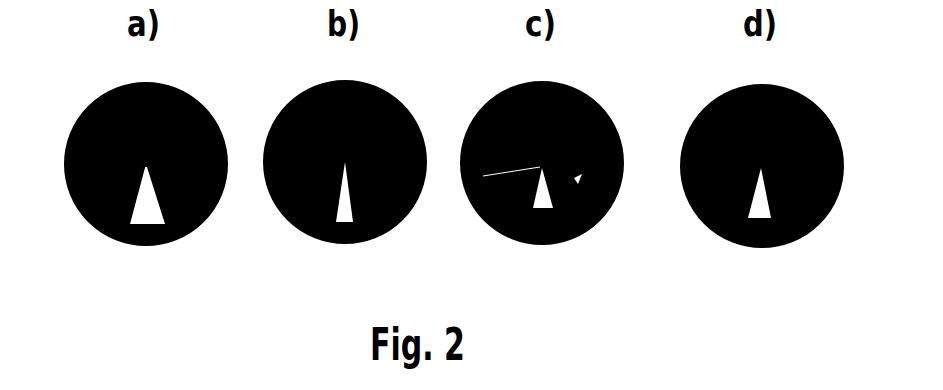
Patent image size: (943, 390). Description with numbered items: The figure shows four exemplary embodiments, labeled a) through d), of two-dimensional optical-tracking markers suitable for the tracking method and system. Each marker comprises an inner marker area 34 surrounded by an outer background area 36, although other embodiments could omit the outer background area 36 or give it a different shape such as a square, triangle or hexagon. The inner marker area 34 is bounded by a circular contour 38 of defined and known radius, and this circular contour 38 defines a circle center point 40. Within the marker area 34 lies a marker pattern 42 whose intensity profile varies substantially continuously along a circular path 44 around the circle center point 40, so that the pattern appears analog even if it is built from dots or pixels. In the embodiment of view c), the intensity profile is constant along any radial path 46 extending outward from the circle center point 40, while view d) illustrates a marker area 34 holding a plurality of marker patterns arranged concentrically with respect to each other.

The inner marker area 34 is at (136, 198).
The outer background area 36 is at (102, 107).
The circular contour 38 is at (178, 207).
The circle center point 40 is at (133, 181).
The marker pattern 42 is at (147, 212).
The circular path 44 is at (540, 208).
The radial path 46 is at (540, 168).